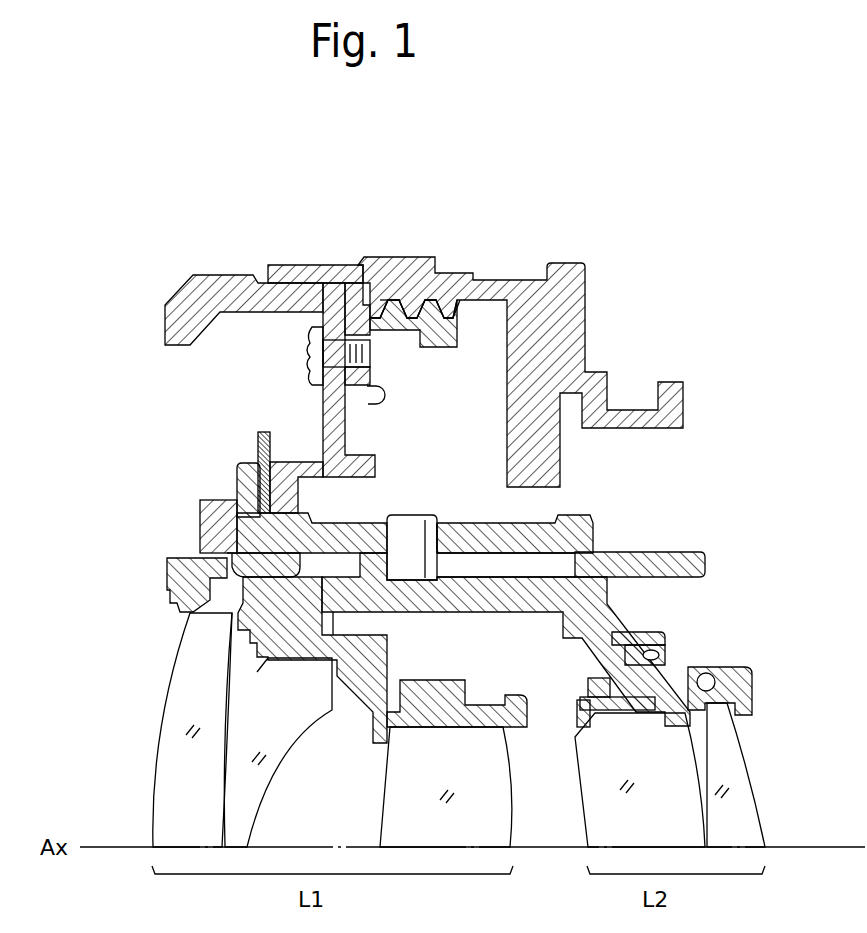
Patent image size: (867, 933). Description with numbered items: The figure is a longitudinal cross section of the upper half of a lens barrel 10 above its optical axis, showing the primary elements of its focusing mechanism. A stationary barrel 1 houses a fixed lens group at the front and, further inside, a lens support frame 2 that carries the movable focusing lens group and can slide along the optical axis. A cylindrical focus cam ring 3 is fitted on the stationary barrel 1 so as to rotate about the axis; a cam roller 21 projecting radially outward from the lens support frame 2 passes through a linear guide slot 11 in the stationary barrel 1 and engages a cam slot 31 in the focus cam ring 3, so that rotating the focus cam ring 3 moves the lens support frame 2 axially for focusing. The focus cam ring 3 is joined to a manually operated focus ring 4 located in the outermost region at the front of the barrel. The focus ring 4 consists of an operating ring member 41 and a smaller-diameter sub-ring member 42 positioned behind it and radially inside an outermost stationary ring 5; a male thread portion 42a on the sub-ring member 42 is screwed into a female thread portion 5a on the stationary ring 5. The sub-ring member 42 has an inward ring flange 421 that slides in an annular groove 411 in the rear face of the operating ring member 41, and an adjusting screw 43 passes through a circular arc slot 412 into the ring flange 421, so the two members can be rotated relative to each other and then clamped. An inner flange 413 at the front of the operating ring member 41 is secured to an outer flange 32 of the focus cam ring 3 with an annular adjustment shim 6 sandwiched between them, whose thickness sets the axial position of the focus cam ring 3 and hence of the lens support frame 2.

The lens barrel 10 is at (730, 155).
The stationary barrel 1 is at (700, 568).
The linear guide slot 11 is at (538, 565).
The lens support frame 2 is at (660, 633).
The cam roller 21 is at (407, 542).
The focus cam ring 3 is at (597, 538).
The cam slot 31 is at (442, 524).
The outer flange 32 is at (240, 483).
The focus ring 4 is at (205, 275).
The operating ring member 41 is at (293, 278).
The annular groove 411 is at (375, 400).
The circular arc slot 412 is at (322, 340).
The inner flange 413 is at (283, 505).
The sub-ring member 42 is at (438, 332).
The ring flange 421 is at (372, 338).
The adjusting screw 43 is at (318, 368).
The outermost stationary ring 5 is at (515, 300).
The female thread portion 5a is at (413, 286).
The male thread portion 42a is at (416, 309).
The adjustment shim 6 is at (258, 446).